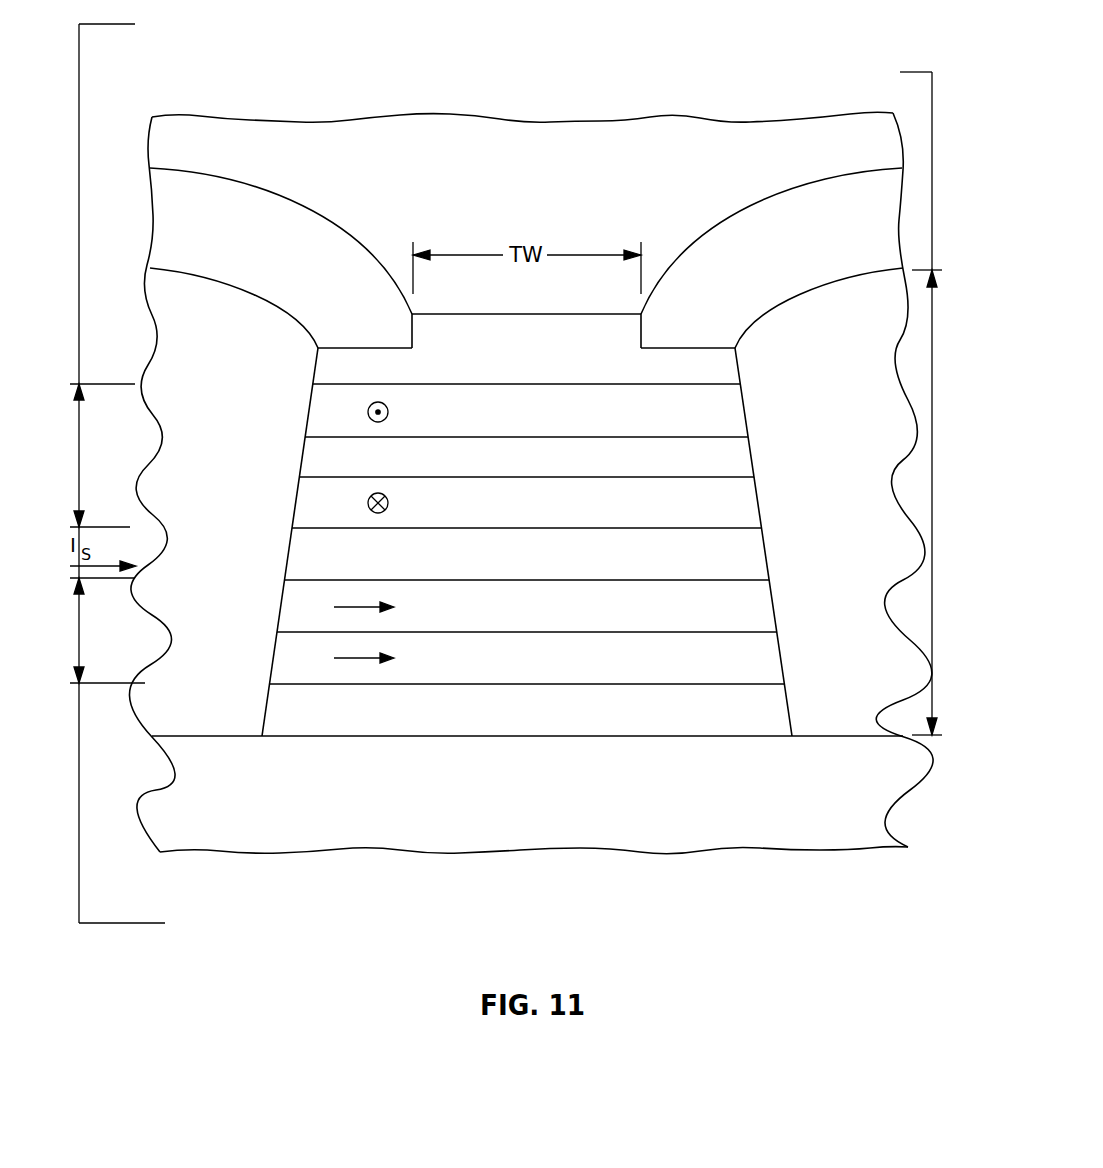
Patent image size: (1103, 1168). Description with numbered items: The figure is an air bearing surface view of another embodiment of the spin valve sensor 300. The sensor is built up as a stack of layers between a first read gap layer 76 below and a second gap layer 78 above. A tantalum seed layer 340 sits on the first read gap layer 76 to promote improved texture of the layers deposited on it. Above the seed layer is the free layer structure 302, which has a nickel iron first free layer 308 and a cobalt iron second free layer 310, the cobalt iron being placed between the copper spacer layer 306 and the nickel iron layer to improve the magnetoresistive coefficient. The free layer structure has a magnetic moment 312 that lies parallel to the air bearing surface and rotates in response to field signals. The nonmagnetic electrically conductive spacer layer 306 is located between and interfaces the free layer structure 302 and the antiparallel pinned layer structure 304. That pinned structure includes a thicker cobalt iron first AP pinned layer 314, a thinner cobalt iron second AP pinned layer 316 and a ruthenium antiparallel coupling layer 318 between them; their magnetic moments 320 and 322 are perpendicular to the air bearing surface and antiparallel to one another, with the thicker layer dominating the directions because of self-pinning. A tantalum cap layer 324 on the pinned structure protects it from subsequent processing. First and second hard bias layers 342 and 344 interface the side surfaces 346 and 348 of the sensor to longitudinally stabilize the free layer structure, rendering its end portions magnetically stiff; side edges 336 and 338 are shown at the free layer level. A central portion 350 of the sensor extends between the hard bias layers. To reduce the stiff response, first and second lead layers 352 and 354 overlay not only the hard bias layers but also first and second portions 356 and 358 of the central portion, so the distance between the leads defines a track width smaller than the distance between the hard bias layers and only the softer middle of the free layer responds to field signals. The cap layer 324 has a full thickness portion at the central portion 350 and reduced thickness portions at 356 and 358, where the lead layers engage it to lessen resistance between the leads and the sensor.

The spin valve sensor 300 is at (767, 398).
The free layer structure 302 is at (293, 757).
The antiparallel pinned layer structure 304 is at (316, 468).
The spacer layer 306 is at (707, 566).
The first free layer 308 is at (707, 670).
The second free layer 310 is at (707, 618).
The magnetic moment 312 is at (342, 607).
The first AP pinned layer 314 is at (707, 513).
The second AP pinned layer 316 is at (707, 425).
The antiparallel coupling layer 318 is at (707, 468).
The magnetic moment 320 is at (378, 514).
The magnetic moment 322 is at (368, 412).
The cap layer 324 is at (705, 376).
The first side edge of free layer structure 336 is at (280, 607).
The second side edge of free layer structure 338 is at (775, 607).
The seed layer 340 is at (707, 723).
The first hard bias layer 342 is at (188, 673).
The second hard bias layer 344 is at (823, 673).
The first side surface 346 is at (297, 497).
The second side surface 348 is at (760, 497).
The central portion 350 is at (569, 314).
The first lead layer 352 is at (333, 230).
The second lead layer 354 is at (723, 230).
The first portion 356 is at (358, 348).
The second portion 358 is at (699, 348).
The first read gap layer 76 is at (628, 806).
The second gap layer G2 78 is at (578, 203).